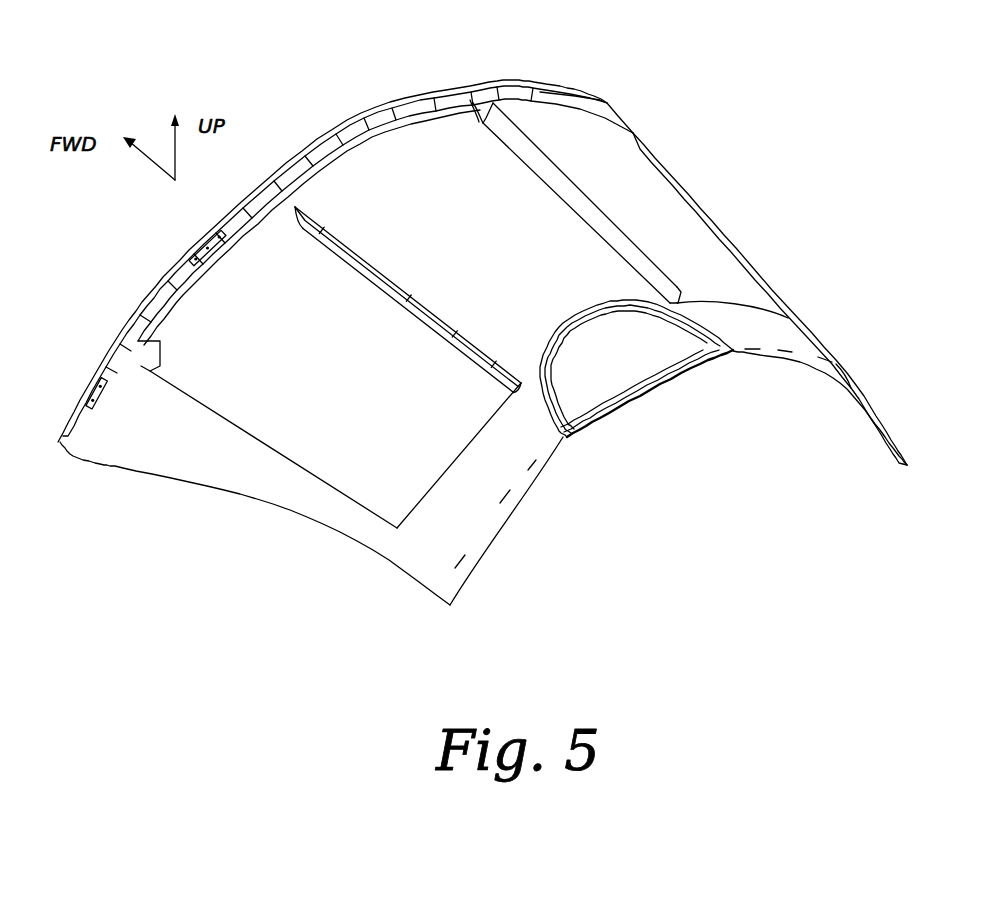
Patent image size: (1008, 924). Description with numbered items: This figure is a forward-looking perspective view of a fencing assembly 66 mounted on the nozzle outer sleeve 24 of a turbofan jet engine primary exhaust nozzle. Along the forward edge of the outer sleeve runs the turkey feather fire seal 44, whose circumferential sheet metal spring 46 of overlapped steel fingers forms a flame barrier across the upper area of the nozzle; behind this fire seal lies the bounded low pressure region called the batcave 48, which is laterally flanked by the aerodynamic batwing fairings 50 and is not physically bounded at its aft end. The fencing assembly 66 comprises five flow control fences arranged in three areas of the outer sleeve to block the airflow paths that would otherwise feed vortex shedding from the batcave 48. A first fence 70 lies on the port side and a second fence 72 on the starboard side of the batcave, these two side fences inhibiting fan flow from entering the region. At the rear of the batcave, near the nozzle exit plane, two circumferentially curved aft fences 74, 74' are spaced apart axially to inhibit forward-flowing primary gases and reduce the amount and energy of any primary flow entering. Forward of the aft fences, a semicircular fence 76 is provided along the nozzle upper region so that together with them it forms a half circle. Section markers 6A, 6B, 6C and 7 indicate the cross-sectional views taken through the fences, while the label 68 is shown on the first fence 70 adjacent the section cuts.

The nozzle outer sleeve 24 is at (467, 523).
The turkey feather fire seal 44 is at (412, 106).
The circumferential sheet metal spring 46 is at (597, 97).
The batcave 48 is at (436, 187).
The batwings 50 is at (292, 440).
The fencing assembly 66 is at (800, 103).
The reinforcement 68 is at (453, 330).
The first fence 70 is at (345, 257).
The second fence 72 is at (607, 230).
The aft fence 74 is at (648, 411).
The aft fence 74' is at (632, 426).
The semicircular fence 76 is at (630, 302).
The section line 6A is at (333, 230).
The section line 6B is at (420, 300).
The section line 6C is at (507, 363).
The section line 7 is at (590, 327).